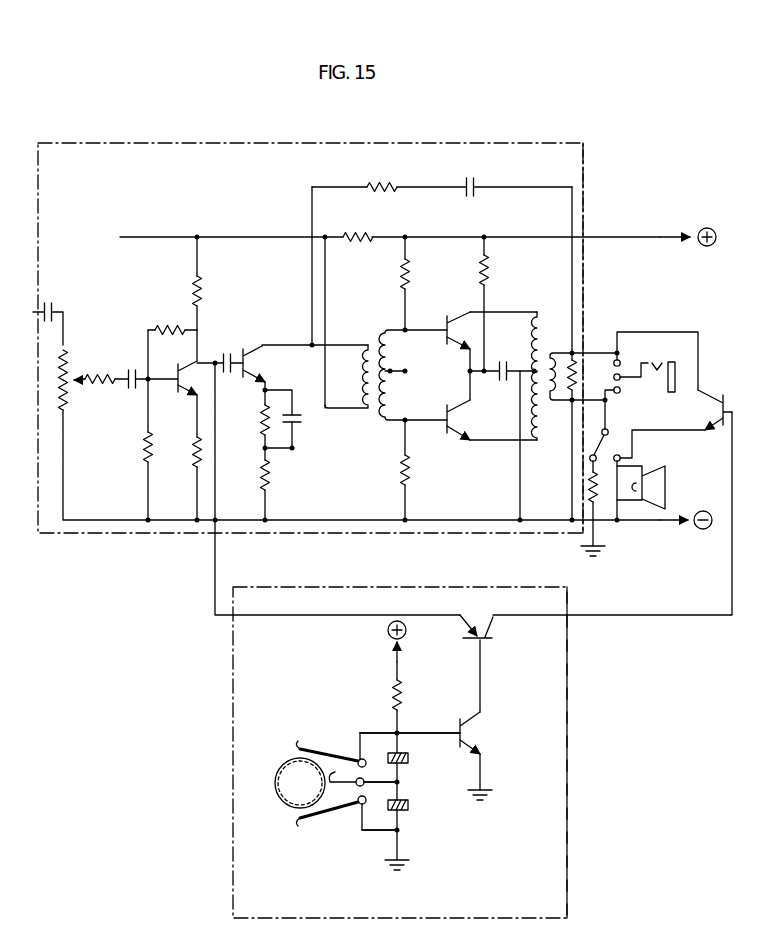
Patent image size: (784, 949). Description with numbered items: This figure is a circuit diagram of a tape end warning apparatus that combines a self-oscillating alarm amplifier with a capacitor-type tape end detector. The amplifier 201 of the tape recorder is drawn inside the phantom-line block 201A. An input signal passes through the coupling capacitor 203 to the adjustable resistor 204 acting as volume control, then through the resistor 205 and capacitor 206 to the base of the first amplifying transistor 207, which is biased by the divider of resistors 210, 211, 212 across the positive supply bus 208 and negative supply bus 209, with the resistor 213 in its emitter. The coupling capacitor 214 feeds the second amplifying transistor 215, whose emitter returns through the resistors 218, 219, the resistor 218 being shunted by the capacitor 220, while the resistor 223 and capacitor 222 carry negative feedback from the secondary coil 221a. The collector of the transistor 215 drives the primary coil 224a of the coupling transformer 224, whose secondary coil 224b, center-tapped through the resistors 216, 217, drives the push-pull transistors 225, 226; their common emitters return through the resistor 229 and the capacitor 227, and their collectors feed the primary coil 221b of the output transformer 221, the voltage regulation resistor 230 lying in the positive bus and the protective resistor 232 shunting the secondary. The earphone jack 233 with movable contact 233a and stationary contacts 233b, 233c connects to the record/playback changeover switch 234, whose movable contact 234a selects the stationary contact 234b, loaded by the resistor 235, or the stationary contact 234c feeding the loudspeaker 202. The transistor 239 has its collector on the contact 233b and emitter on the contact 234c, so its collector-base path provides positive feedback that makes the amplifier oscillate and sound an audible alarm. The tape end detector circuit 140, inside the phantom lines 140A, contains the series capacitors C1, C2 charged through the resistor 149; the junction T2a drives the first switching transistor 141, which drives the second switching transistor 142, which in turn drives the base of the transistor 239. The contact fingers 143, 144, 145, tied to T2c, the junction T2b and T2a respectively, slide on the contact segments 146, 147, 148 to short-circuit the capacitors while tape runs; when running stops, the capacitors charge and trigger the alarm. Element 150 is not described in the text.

The amplifier 201 is at (262, 163).
The block 201A is at (586, 176).
The loudspeaker 202 is at (665, 482).
The coupling capacitor 203 is at (60, 292).
The adjustable resistor 204 is at (66, 352).
The resistor 205 is at (102, 395).
The capacitor 206 is at (133, 392).
The first amplifying transistor 207 is at (180, 394).
The positive supply bus 208 is at (650, 235).
The negative supply bus 209 is at (682, 529).
The resistor 210 is at (200, 282).
The resistor 211 is at (160, 326).
The resistor 212 is at (143, 445).
The resistor 213 is at (193, 456).
The coupling capacitor 214 is at (226, 352).
The second amplifying transistor 215 is at (248, 350).
The resistor 216 is at (411, 277).
The resistor 217 is at (411, 469).
The resistor 218 is at (260, 422).
The resistor 219 is at (260, 475).
The capacitor 220 is at (291, 410).
The output transformer 221 is at (562, 361).
The secondary coil 221a is at (570, 350).
The primary coil 221b is at (535, 330).
The capacitor 222 is at (470, 180).
The resistor 223 is at (382, 181).
The coupling transformer 224 is at (362, 376).
The primary coil 224a is at (357, 396).
The secondary coil 224b is at (386, 334).
The transistor 225 is at (447, 341).
The transistor 226 is at (452, 406).
The capacitor 227 is at (502, 381).
The resistor 229 is at (488, 273).
The voltage regulation resistor 230 is at (362, 230).
The protective resistor 232 is at (567, 396).
The earphone jack 233 is at (667, 356).
The movable contact 233a is at (618, 356).
The stationary contact 233b is at (672, 352).
The stationary contact 233c is at (622, 393).
The record/playback changeover switch 234 is at (621, 451).
The movable contact 234a is at (609, 433).
The stationary contact 234b is at (590, 459).
The stationary contact 234c is at (622, 458).
The resistor 235 is at (596, 520).
The transistor 239 is at (722, 397).
The tape end detector circuit 140 is at (546, 722).
The phantom lines 140A is at (567, 842).
The first switching transistor 141 is at (476, 728).
The second switching transistor 142 is at (490, 640).
The contact finger 143 is at (338, 752).
The contact finger 144 is at (372, 752).
The contact finger 145 is at (340, 809).
The contact segment 146 is at (292, 766).
The contact segment 147 is at (322, 821).
The contact segment 148 is at (287, 801).
The resistor 149 is at (408, 696).
The contact arm 150 is at (292, 776).
The junction T2a is at (400, 733).
The junction T2b is at (400, 782).
The end of capacitor C2 T2c is at (400, 832).
The capacitor C1 is at (413, 753).
The capacitor C2 is at (408, 808).